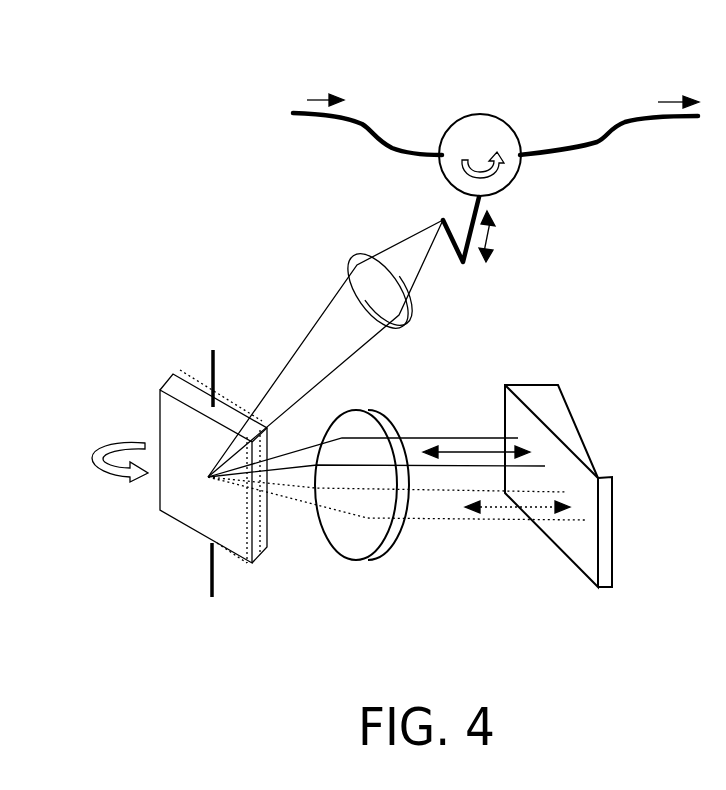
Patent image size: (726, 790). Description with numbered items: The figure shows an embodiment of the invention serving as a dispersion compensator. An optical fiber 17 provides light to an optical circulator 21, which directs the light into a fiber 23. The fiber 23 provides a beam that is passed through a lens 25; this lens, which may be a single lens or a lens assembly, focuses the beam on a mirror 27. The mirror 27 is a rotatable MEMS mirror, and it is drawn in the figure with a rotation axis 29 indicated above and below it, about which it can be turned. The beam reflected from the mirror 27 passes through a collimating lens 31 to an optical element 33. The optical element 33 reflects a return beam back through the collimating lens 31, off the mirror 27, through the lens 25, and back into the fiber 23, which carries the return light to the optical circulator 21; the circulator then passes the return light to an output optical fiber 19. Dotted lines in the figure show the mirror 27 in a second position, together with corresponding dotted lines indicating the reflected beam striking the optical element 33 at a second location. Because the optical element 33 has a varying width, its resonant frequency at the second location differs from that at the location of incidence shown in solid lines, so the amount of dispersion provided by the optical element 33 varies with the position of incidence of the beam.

The optical fiber 17 is at (313, 116).
The output optical fiber 19 is at (672, 119).
The optical circulator 21 is at (495, 128).
The fiber 23 is at (467, 265).
The lens 25 is at (355, 263).
The mirror 27 is at (155, 436).
The rotation axis 29 is at (208, 357).
The collimating lens 31 is at (380, 561).
The optical element 33 is at (575, 400).